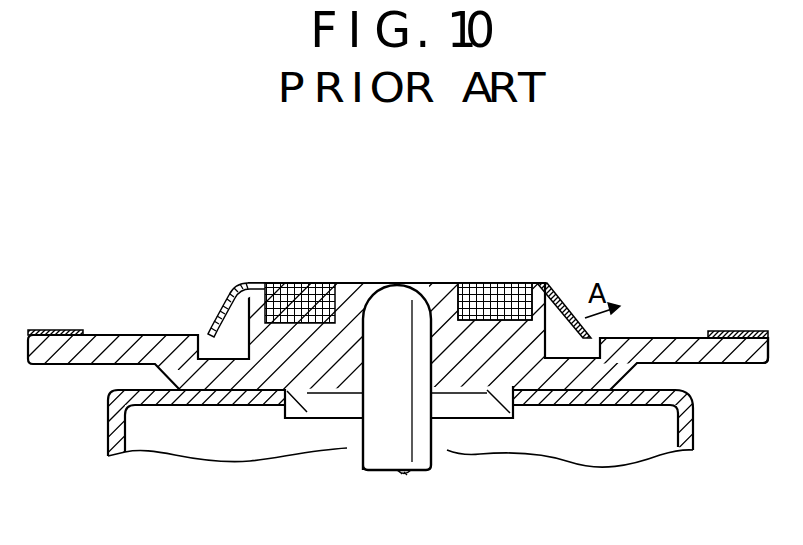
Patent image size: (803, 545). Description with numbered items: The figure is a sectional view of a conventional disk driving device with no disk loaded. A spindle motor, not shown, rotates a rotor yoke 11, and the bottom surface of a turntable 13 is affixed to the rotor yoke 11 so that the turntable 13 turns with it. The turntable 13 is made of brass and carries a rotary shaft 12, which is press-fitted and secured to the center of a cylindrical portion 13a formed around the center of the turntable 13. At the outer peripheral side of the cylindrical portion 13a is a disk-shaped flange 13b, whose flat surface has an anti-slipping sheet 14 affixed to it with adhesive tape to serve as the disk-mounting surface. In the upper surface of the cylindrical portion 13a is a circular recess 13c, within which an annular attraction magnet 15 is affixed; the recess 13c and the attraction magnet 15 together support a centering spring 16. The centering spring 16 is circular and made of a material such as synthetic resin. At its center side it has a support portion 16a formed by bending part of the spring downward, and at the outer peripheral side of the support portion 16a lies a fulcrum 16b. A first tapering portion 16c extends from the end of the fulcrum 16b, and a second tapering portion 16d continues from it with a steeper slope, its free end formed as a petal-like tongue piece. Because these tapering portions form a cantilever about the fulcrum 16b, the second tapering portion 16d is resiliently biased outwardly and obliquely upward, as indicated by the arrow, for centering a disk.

The rotor yoke 11 is at (695, 420).
The rotary shaft 12 is at (388, 448).
The turntable 13 is at (638, 330).
The cylindrical portion 13a is at (485, 410).
The disk-shaped flange 13b is at (680, 347).
The circular recess 13c is at (478, 322).
The anti-slipping sheet 14 is at (748, 330).
The attraction magnet 15 is at (507, 290).
The centering spring 16 is at (224, 244).
The support portion 16a is at (278, 297).
The fulcrum 16b is at (210, 334).
The first tapering portion 16c is at (238, 287).
The second tapering portion 16d is at (212, 312).